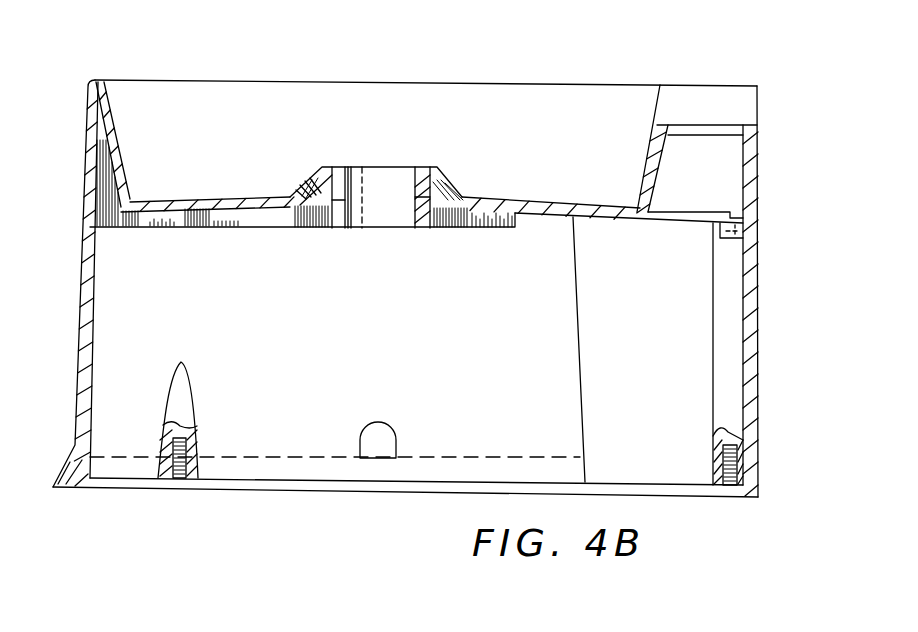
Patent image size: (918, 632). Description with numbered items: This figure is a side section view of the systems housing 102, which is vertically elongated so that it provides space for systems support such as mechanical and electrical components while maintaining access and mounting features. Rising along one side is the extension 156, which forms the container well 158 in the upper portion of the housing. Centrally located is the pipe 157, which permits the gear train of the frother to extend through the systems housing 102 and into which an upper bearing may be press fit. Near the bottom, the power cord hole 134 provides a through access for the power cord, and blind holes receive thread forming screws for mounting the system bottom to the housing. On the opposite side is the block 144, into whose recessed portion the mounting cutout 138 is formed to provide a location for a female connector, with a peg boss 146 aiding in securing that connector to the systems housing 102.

The systems housing 102 is at (493, 124).
The power cord hole 134 is at (380, 435).
The mounting cutout 138 is at (688, 146).
The block 144 is at (760, 108).
The peg bosses 146 is at (723, 238).
The extension 156 is at (88, 107).
The pipe 157 is at (378, 182).
The container well 158 is at (188, 145).